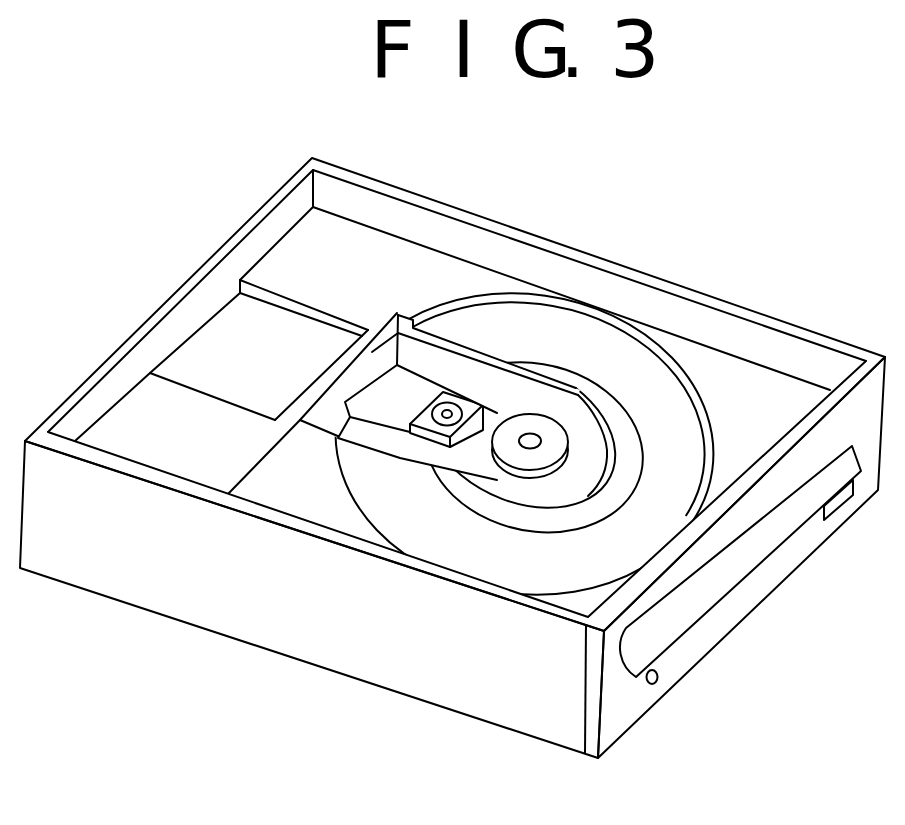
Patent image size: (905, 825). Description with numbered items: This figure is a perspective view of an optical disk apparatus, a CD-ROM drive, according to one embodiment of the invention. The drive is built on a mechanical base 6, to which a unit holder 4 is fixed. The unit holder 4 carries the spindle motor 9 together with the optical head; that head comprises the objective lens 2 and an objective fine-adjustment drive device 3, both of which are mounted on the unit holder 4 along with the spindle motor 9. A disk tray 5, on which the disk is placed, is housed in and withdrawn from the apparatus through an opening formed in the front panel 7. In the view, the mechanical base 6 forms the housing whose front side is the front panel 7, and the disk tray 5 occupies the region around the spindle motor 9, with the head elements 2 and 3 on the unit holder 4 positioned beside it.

The objective lens 2 is at (440, 425).
The objective fine-adjustment drive device 3 is at (462, 403).
The unit holder 4 is at (437, 357).
The disk tray 5 is at (662, 396).
The mechanical base 6 is at (240, 618).
The front panel 7 is at (717, 610).
The spindle motor 9 is at (553, 427).